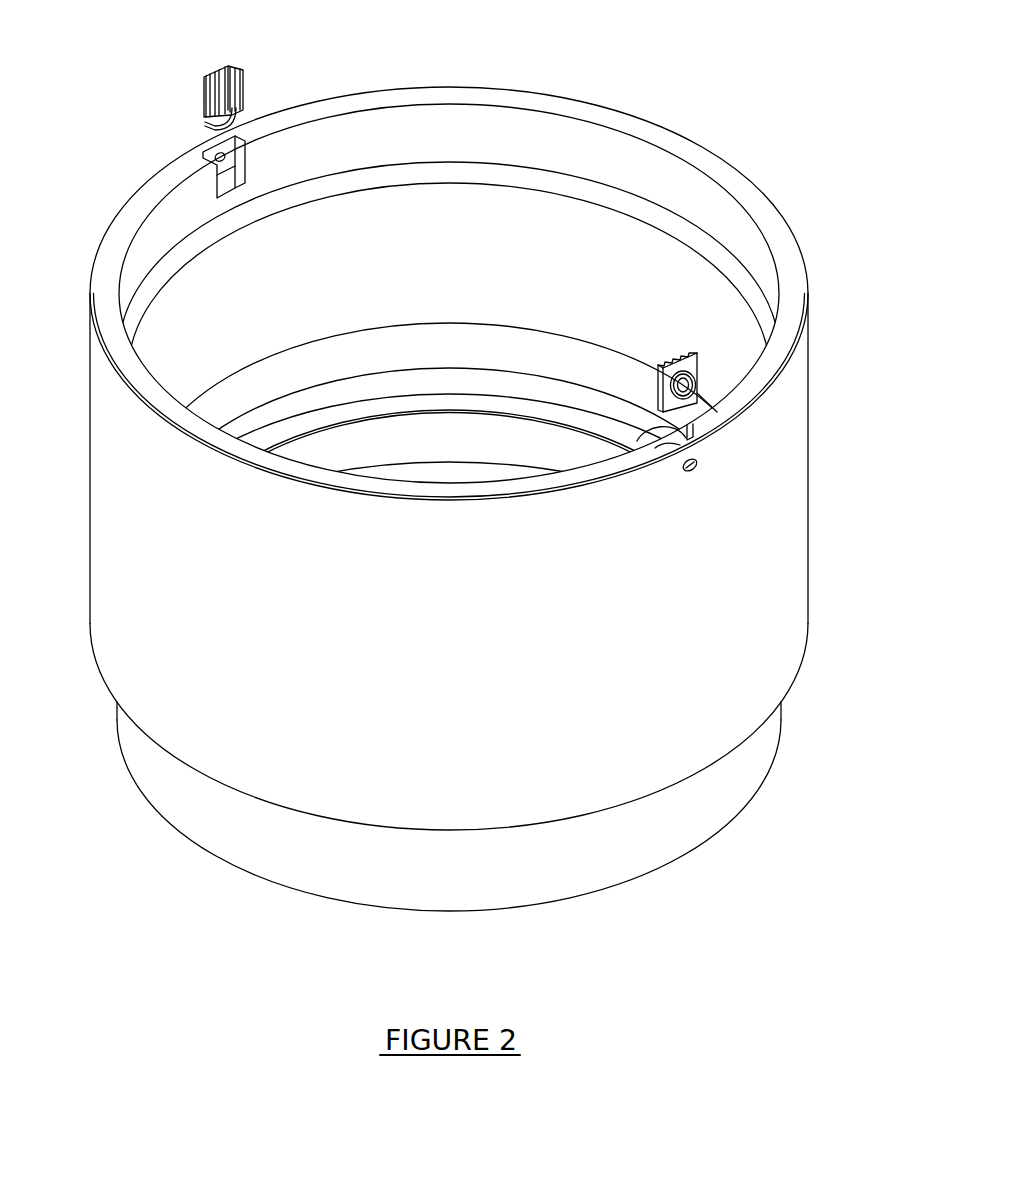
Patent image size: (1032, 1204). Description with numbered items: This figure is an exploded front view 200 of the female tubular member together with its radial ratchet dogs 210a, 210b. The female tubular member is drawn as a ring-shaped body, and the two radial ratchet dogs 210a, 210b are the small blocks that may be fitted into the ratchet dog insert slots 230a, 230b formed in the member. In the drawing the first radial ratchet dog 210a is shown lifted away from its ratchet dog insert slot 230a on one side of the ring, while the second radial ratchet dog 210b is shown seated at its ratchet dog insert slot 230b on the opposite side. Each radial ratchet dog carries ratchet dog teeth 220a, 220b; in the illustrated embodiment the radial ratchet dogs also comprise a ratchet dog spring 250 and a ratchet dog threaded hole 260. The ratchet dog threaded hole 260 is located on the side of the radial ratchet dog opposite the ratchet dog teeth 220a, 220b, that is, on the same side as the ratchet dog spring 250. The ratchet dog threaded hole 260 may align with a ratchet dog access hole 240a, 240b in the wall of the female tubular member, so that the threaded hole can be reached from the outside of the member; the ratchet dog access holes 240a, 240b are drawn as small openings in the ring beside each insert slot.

The exploded front view 200 is at (133, 943).
The radial ratchet dog 210a is at (205, 77).
The ratchet dog teeth 220a is at (213, 126).
The ratchet dog insert slot 230a is at (238, 158).
The ratchet dog access hole 240a is at (224, 162).
The radial ratchet dog 210b is at (685, 357).
The ratchet dog teeth 220b is at (667, 353).
The ratchet dog insert slot 230b is at (640, 428).
The ratchet dog access hole 240b is at (700, 463).
The ratchet dog spring 250 is at (688, 384).
The ratchet dog threaded hole 260 is at (697, 377).